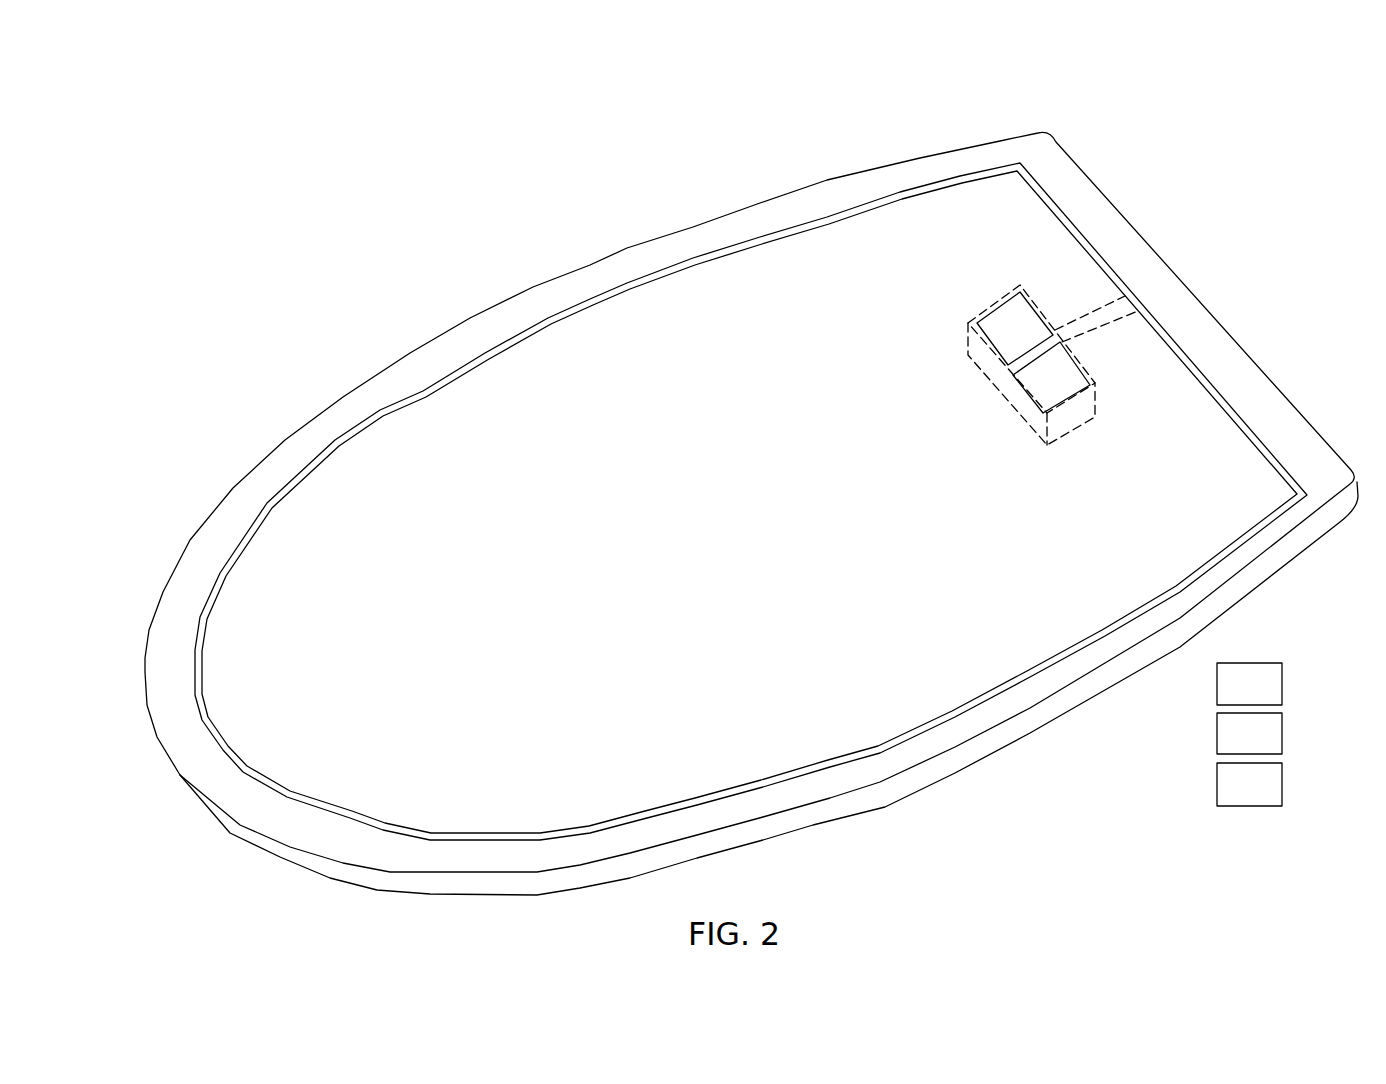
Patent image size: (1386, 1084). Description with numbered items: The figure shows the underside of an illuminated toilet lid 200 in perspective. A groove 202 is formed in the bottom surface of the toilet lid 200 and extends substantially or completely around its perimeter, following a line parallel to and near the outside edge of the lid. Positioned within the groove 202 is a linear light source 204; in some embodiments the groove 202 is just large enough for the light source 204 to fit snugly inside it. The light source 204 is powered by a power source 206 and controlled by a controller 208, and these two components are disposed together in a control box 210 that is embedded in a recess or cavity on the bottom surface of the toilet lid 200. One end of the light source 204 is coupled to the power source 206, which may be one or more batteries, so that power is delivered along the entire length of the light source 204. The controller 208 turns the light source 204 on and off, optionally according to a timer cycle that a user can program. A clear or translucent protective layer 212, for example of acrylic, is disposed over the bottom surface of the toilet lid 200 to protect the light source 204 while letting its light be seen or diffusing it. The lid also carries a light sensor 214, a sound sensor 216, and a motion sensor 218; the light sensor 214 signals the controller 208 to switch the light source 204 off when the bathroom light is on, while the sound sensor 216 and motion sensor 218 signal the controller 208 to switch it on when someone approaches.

The toilet lid 200 is at (330, 108).
The groove 202 is at (548, 322).
The linear light source 204 is at (423, 385).
The power source 206 is at (1030, 338).
The controller 208 is at (1067, 390).
The control box 210 is at (990, 310).
The protective layer 212 is at (730, 232).
The light sensor 214 is at (1268, 695).
The sound sensor 216 is at (1268, 745).
The motion sensor 218 is at (1268, 797).